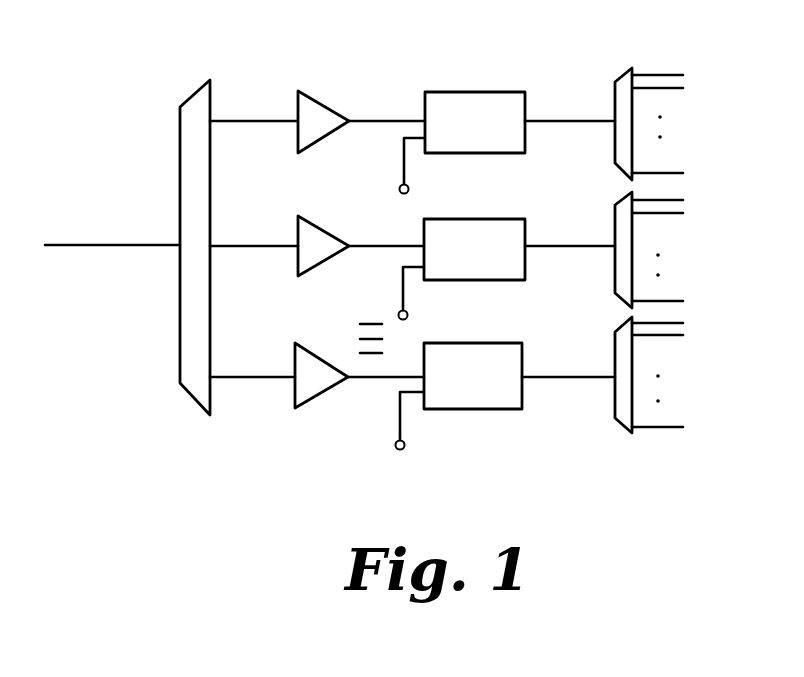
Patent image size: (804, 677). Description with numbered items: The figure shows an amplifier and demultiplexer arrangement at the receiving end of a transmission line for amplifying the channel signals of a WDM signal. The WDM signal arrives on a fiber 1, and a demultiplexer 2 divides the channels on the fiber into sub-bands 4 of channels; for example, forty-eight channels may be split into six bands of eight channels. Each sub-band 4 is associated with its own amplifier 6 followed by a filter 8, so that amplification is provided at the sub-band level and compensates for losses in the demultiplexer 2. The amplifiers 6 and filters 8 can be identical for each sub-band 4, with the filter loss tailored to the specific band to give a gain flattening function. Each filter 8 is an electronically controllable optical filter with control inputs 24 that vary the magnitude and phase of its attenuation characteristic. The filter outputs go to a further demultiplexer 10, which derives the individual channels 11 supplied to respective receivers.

The fiber 1 is at (85, 244).
The demultiplexer 2 is at (190, 97).
The sub-bands 4 is at (252, 120).
The amplifier 6 is at (318, 113).
The filter 8 is at (470, 100).
The further demultiplexer 10 is at (622, 76).
The individual channels 11 is at (656, 73).
The control inputs 24 is at (404, 168).